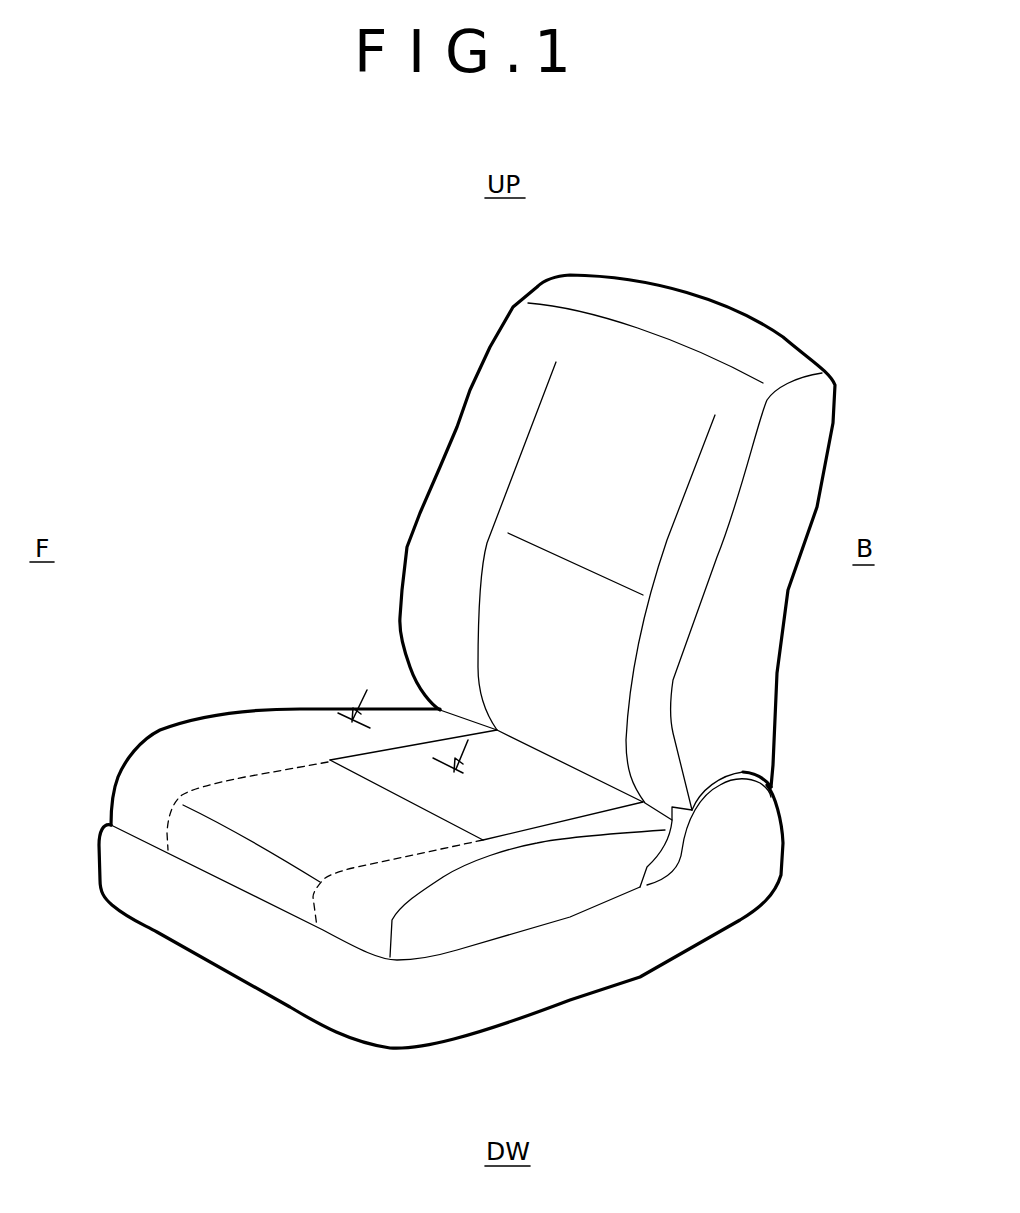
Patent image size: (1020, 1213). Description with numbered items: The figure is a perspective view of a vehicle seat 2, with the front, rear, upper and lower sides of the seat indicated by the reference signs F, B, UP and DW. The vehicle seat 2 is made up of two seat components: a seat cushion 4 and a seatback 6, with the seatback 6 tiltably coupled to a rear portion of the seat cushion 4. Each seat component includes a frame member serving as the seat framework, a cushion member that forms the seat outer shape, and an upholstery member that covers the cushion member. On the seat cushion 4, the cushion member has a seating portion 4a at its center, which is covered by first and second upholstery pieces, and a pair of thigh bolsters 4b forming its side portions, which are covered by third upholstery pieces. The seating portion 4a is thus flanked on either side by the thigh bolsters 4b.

The vehicle seat 2 is at (722, 284).
The seatback 6 is at (457, 427).
The seat cushion 4 is at (275, 708).
The seating portion 4a is at (536, 815).
The thigh bolsters 4b is at (240, 763).